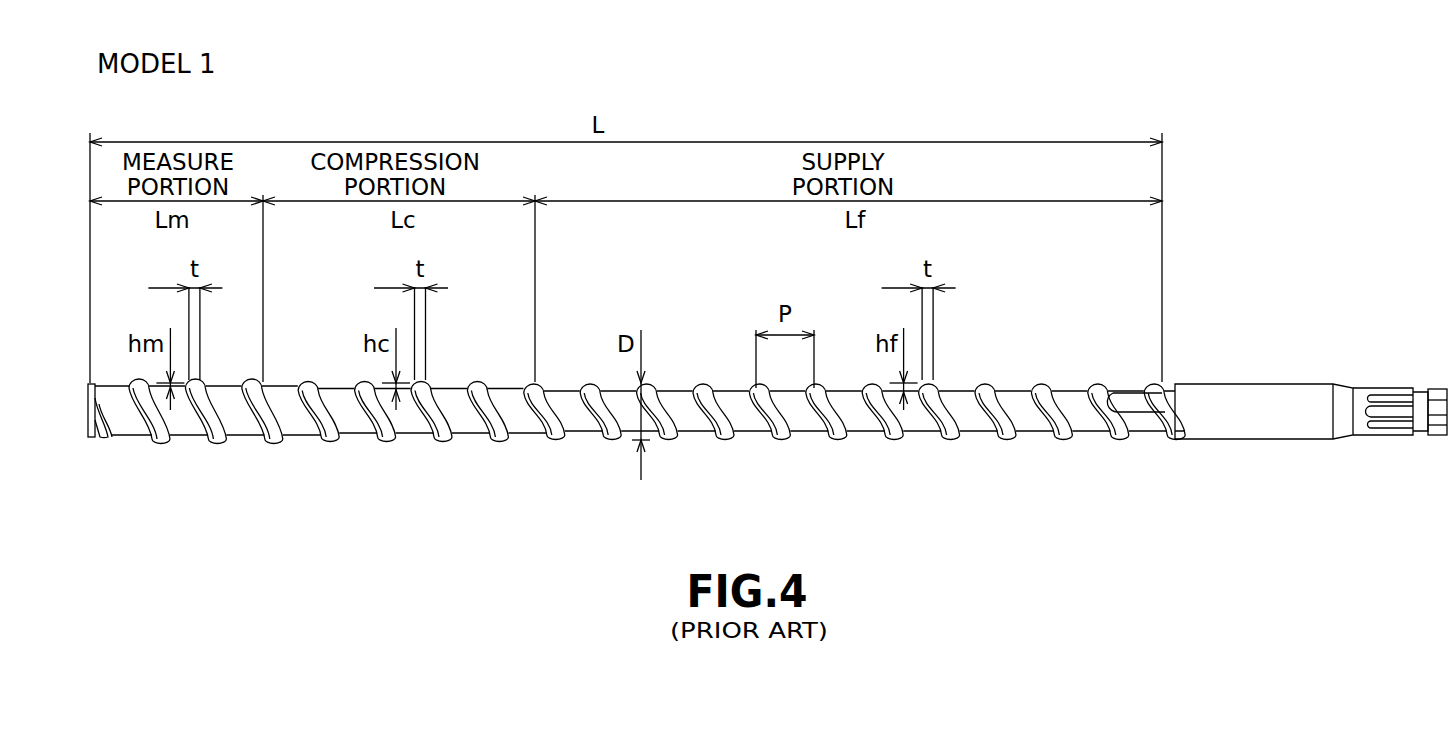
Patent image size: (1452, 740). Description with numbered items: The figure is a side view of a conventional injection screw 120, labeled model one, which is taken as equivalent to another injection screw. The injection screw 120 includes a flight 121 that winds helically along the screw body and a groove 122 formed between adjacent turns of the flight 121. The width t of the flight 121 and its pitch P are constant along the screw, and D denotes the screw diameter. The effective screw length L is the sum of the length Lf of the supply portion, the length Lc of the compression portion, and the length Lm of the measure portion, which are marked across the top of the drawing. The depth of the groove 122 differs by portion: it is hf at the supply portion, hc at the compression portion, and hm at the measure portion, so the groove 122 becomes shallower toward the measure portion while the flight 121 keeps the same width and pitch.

The injection screw 120 is at (390, 518).
The flight 121 is at (838, 424).
The groove 122 is at (754, 423).